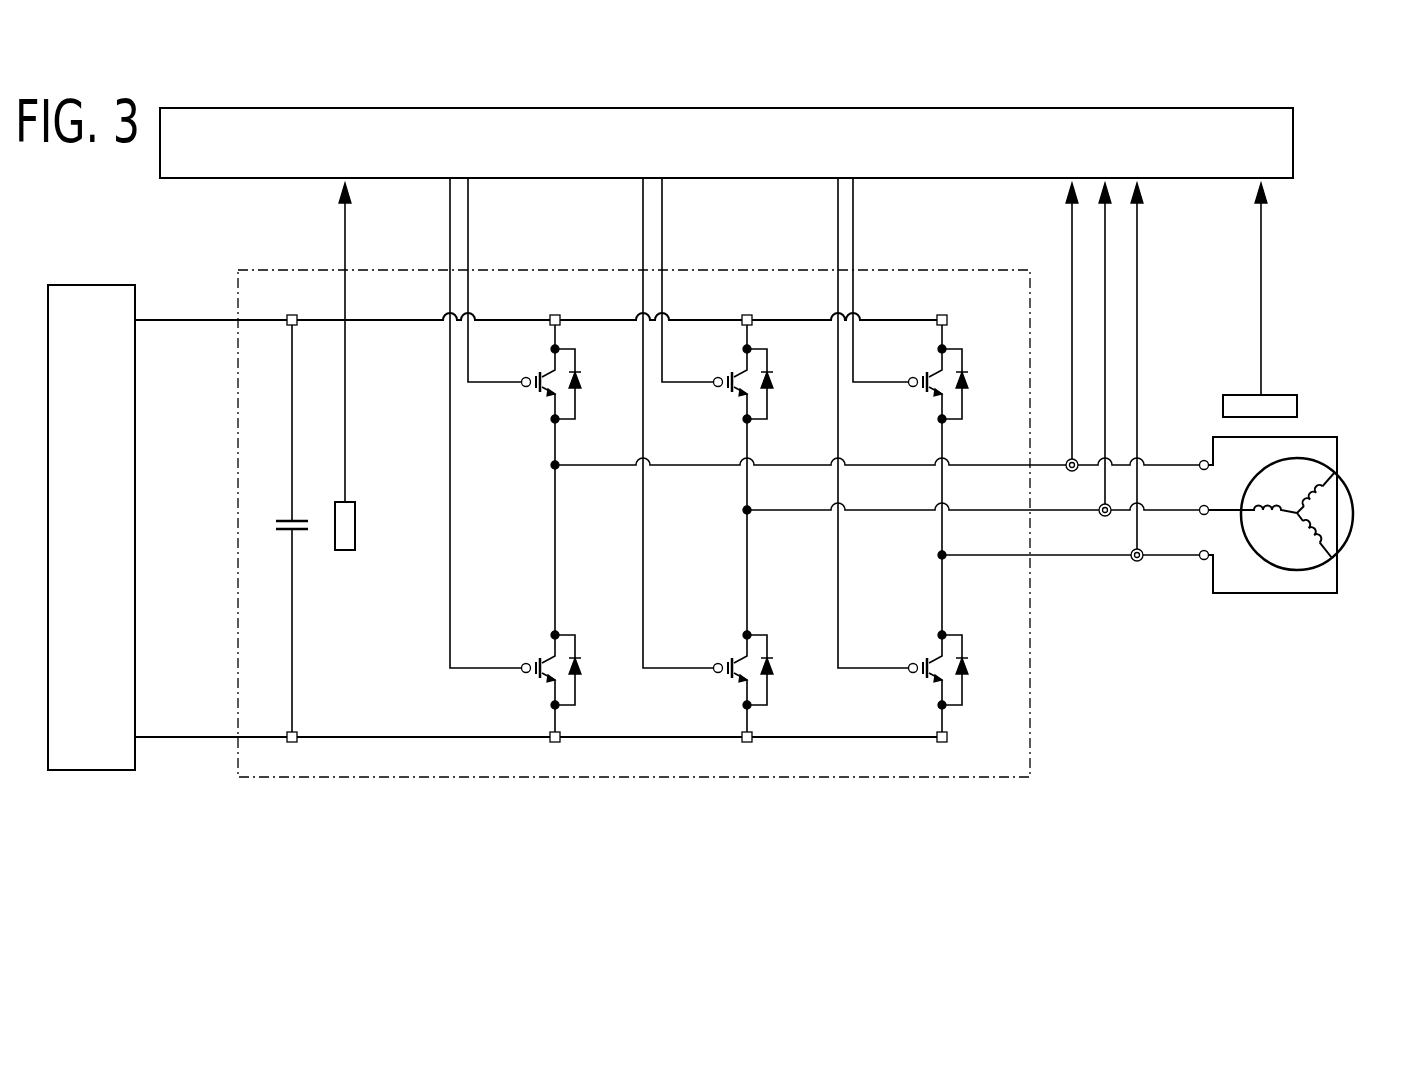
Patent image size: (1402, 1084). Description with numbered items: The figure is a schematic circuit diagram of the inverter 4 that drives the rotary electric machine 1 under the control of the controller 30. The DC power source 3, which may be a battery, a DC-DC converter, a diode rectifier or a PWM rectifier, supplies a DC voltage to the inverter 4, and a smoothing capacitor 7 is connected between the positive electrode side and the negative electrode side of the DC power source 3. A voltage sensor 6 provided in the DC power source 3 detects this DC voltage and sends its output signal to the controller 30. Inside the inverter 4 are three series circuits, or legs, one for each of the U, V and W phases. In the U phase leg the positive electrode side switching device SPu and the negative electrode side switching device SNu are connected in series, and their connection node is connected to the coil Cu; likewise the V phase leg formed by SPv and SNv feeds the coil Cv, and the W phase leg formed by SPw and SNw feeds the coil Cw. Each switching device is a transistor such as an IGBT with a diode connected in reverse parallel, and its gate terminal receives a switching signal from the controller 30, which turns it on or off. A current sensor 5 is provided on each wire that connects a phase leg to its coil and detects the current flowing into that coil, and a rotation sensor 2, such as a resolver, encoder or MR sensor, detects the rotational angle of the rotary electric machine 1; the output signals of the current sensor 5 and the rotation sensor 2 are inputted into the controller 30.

The controller 30 is at (697, 158).
The inverter 4 is at (533, 270).
The DC power source 3 is at (94, 536).
The smoothing capacitor 7 is at (298, 514).
The voltage sensor 6 is at (358, 520).
The rotation sensor 2 is at (1284, 395).
The current sensor 5 is at (1072, 471).
The rotary electric machine 1 is at (1292, 551).
The U phase U is at (555, 316).
The V phase V is at (746, 316).
The W phase W is at (942, 316).
The positive electrode side switching device of U phase SPu is at (541, 363).
The positive electrode side switching device of V phase SPv is at (733, 363).
The positive electrode side switching device of W phase SPw is at (928, 363).
The negative electrode side switching device of U phase SNu is at (541, 648).
The negative electrode side switching device of V phase SNv is at (733, 648).
The negative electrode side switching device of W phase SNw is at (928, 648).
The coil of U phase Cu is at (1328, 497).
The coil of V phase Cv is at (1267, 505).
The coil of W phase Cw is at (1312, 545).